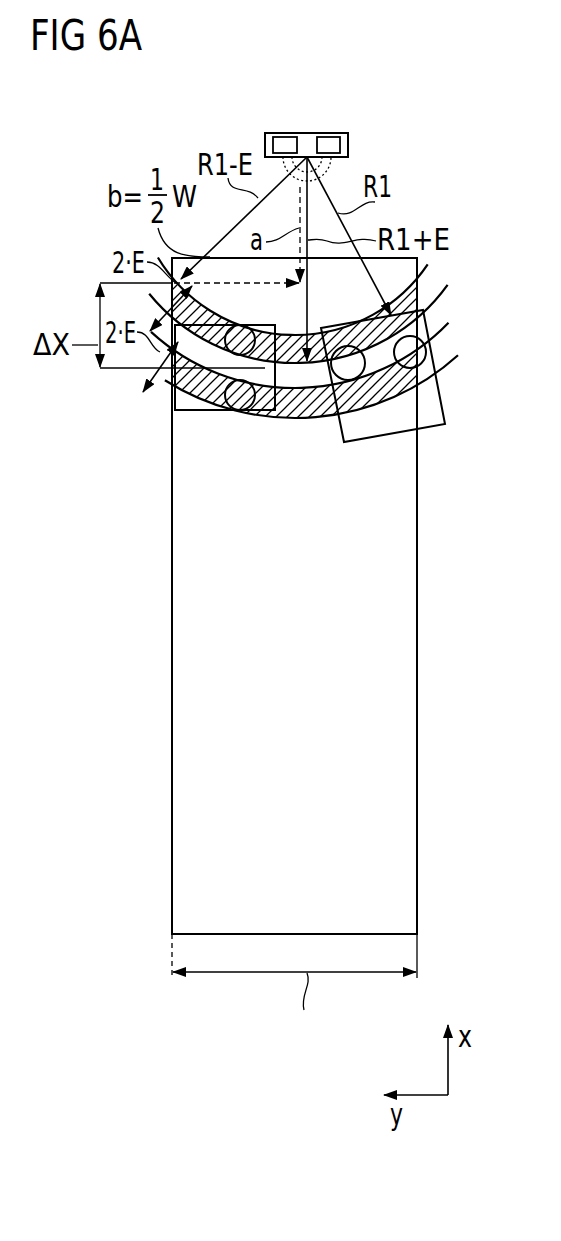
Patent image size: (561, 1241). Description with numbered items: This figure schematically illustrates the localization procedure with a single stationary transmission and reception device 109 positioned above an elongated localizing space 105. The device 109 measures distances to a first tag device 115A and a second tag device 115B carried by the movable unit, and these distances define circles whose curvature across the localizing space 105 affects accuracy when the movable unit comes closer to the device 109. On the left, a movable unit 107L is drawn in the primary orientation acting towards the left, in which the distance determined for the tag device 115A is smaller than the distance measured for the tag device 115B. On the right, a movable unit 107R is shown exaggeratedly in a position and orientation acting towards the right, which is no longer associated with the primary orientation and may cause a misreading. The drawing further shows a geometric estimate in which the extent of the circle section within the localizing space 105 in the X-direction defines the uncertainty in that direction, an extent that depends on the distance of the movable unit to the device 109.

The localizing space 105 is at (418, 582).
The transmission and reception device 109 is at (302, 131).
The movable unit acting towards the left 107L is at (194, 412).
The movable unit acting towards the right 107R is at (383, 440).
The first tag device 115A is at (178, 388).
The second tag device 115B is at (427, 322).